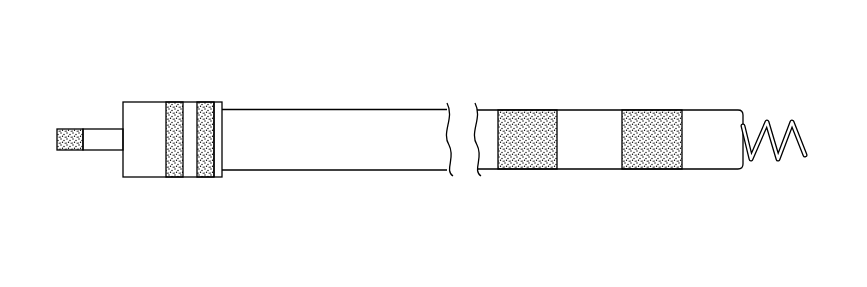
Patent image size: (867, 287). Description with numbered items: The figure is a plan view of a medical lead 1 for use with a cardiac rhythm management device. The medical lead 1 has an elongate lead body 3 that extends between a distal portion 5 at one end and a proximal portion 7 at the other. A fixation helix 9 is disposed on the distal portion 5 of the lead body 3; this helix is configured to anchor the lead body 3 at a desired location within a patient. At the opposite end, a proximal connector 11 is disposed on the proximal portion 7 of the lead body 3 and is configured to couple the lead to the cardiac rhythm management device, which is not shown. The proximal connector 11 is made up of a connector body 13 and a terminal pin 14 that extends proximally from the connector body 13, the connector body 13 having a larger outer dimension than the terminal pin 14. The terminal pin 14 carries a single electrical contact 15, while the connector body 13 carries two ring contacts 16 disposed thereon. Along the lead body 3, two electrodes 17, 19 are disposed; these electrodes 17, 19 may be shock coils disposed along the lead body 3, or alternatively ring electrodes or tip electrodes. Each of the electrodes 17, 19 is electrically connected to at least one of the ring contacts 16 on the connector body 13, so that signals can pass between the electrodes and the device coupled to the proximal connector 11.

The medical lead 1 is at (347, 48).
The lead body 3 is at (332, 176).
The distal portion 5 is at (727, 174).
The proximal portion 7 is at (256, 180).
The fixation helix 9 is at (767, 121).
The proximal connector 11 is at (173, 73).
The connector body 13 is at (133, 163).
The terminal pin 14 is at (102, 145).
The electrical contact 15 is at (65, 147).
The ring contacts 16 is at (203, 167).
The electrode 17 is at (649, 160).
The electrode 19 is at (528, 160).